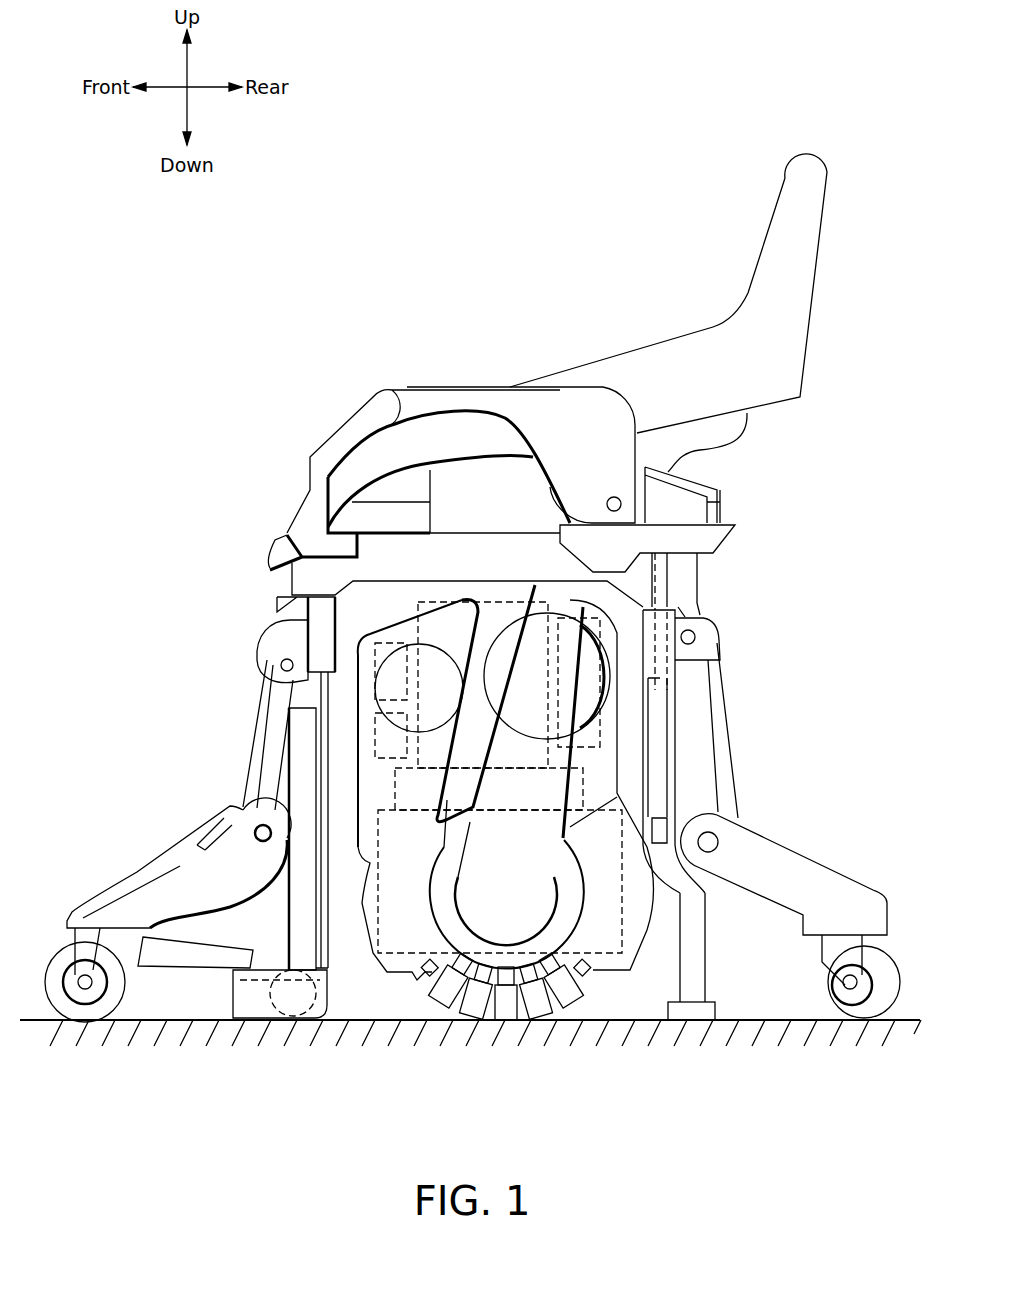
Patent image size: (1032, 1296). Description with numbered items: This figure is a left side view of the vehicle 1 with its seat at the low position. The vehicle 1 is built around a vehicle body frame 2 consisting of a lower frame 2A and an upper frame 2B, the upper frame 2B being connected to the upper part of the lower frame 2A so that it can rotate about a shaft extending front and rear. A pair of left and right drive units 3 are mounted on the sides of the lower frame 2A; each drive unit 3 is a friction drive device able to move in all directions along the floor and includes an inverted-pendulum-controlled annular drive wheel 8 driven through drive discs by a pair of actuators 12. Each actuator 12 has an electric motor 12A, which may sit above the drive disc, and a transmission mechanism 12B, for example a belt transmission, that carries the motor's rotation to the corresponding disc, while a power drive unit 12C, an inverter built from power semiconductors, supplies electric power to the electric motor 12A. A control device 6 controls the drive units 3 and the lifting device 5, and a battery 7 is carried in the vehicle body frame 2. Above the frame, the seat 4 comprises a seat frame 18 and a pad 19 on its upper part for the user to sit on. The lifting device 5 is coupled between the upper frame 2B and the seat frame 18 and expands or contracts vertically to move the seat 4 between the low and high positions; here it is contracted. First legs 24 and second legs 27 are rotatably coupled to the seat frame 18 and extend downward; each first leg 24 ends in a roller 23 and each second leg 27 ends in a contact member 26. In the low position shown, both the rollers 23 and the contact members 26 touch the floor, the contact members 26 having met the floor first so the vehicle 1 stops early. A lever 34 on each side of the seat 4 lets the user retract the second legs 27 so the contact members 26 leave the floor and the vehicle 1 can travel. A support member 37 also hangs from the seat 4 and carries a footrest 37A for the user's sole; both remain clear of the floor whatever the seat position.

The vehicle 1 is at (393, 216).
The vehicle body frame 2 is at (589, 765).
The lower frame 2A is at (378, 830).
The upper frame 2B is at (395, 788).
The drive unit 3 is at (421, 996).
The seat 4 is at (779, 179).
The lifting device 5 is at (498, 640).
The control device 6 is at (378, 646).
The battery 7 is at (675, 700).
The drive wheel 8 is at (542, 1020).
The actuator 12 is at (572, 896).
The electric motor 12A is at (511, 638).
The transmission mechanism 12B is at (503, 923).
The power drive unit 12C is at (393, 733).
The seat frame 18 is at (405, 553).
The pad 19 is at (698, 327).
The roller 23 is at (65, 1028).
The first leg 24 is at (172, 868).
The contact member 26 is at (250, 990).
The second leg 27 is at (297, 872).
The lever 34 is at (573, 400).
The support member 37 is at (192, 980).
The footrest 37A is at (156, 958).